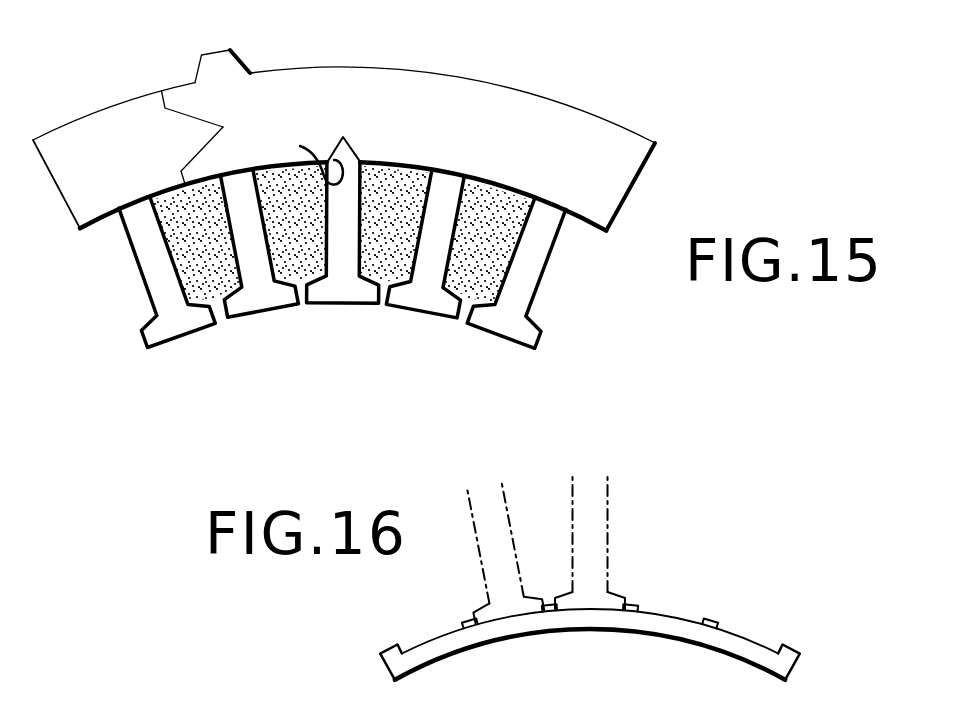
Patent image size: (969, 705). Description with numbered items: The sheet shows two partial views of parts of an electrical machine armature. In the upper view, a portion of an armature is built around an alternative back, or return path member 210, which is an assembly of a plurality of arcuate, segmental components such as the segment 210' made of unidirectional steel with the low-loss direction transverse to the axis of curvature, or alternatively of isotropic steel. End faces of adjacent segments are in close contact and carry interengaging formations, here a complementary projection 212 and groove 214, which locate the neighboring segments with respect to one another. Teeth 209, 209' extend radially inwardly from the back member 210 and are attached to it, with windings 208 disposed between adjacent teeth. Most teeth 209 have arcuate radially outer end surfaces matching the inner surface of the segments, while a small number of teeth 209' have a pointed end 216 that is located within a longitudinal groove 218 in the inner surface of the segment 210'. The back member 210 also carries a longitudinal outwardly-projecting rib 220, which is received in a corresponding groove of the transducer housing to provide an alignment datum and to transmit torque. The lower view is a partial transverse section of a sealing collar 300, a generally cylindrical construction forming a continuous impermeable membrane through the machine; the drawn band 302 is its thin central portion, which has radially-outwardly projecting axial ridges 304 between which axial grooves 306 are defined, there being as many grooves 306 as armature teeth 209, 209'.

In FIG. 15, the windings 208 is at (195, 247).
In FIG. 15, the teeth 209 is at (342, 271).
In FIG. 15, the teeth with end formation 209' is at (343, 265).
In FIG. 15, the back member 210 is at (344, 116).
In FIG. 15, the segmental component 210' is at (590, 143).
In FIG. 15, the projection 212 is at (180, 145).
In FIG. 15, the groove 214 is at (218, 112).
In FIG. 15, the pointed end 216 is at (301, 158).
In FIG. 15, the longitudinal groove 218 is at (362, 137).
In FIG. 15, the rib 220 is at (231, 50).
In FIG. 16, the sealing collar 300 is at (720, 530).
In FIG. 16, the ring band 302 is at (725, 650).
In FIG. 16, the axial ridges 304 is at (468, 617).
In FIG. 16, the axial grooves 306 is at (417, 648).